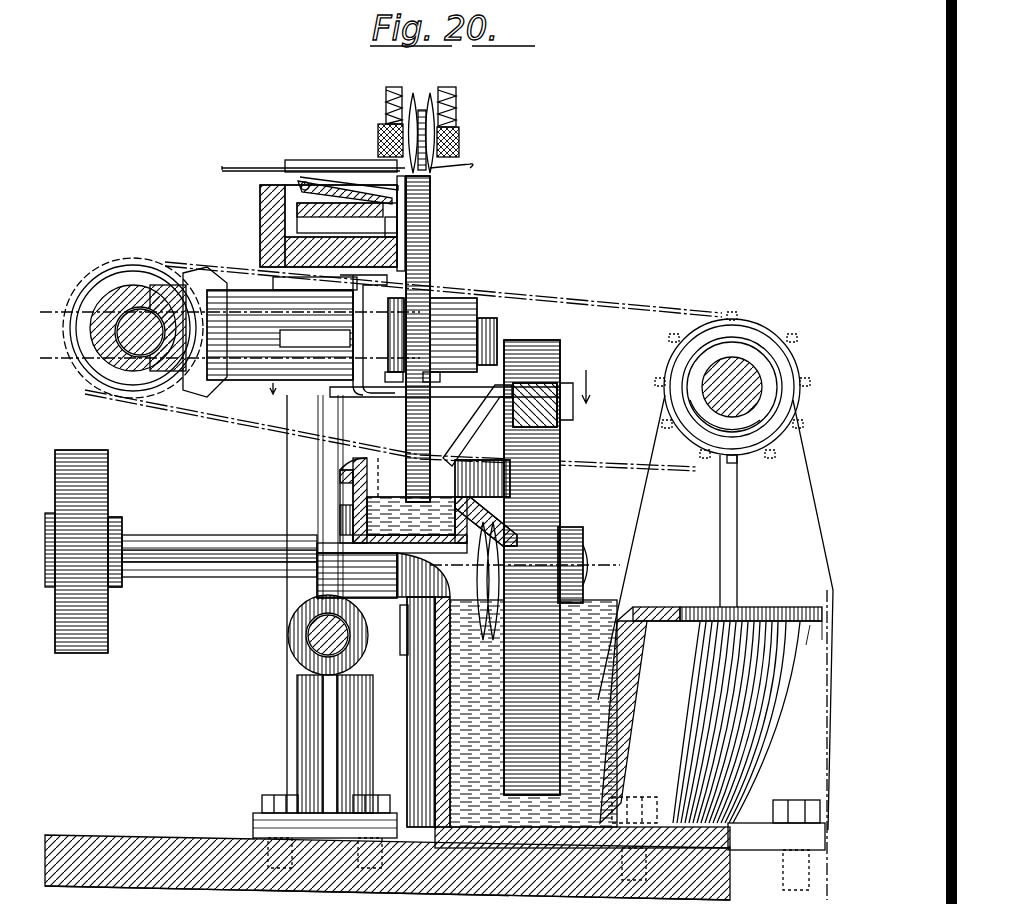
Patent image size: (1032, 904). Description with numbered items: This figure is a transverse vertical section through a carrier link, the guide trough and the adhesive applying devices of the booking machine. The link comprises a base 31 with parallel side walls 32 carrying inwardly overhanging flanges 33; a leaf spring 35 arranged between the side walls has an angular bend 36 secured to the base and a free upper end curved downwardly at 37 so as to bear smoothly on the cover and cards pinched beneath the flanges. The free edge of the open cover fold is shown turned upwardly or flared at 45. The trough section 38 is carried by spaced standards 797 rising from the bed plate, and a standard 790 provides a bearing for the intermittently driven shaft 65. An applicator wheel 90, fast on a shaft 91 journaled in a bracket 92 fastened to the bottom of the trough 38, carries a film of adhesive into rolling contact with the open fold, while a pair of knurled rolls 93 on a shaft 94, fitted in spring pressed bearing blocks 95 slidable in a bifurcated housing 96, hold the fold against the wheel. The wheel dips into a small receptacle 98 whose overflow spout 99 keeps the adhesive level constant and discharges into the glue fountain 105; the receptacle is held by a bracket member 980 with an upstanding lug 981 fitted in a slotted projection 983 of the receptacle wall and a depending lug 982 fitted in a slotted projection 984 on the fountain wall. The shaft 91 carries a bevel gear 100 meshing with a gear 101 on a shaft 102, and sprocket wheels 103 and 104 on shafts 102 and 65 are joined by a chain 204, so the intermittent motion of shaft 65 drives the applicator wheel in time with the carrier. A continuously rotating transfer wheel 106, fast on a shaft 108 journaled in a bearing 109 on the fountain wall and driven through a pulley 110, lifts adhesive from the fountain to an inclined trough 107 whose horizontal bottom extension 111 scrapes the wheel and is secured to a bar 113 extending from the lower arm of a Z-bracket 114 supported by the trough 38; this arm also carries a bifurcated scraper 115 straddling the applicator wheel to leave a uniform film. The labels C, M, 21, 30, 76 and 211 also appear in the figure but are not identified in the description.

The cutting edge C is at (233, 162).
The mark line M is at (340, 183).
The direction arrow 21 is at (596, 389).
The knife block 30 is at (398, 231).
The base 31 is at (347, 218).
The side walls 32 is at (298, 185).
The inwardly overhanging flanges 33 is at (290, 160).
The leaf spring 35 is at (322, 196).
The angular bend 36 is at (262, 218).
The downwardly curved spring end 37 is at (430, 190).
The guide trough 38 is at (262, 205).
The upwardly flared edge 45 is at (470, 167).
The intermittently driven shaft 65 is at (740, 365).
The roller wheel 76 is at (312, 645).
The applicator wheel 90 is at (432, 213).
The shaft 91 is at (445, 302).
The bracket 92 is at (262, 380).
The knurled rolls 93 is at (432, 98).
The shaft 94 is at (458, 130).
The spring pressed bearing blocks 95 is at (460, 148).
The bifurcated housing 96 is at (392, 100).
The receptacle 98 is at (345, 482).
The overflow spout 99 is at (496, 482).
The bevel gear 100 is at (215, 270).
The bevel gear 101 is at (140, 285).
The shaft 102 is at (135, 290).
The sprocket wheel 103 is at (95, 283).
The sprocket wheel 104 is at (727, 310).
The glue fountain 105 is at (628, 722).
The transfer wheel 106 is at (546, 650).
The inclined trough 107 is at (472, 432).
The shaft 108 is at (170, 556).
The bearing 109 is at (477, 593).
The pulley 110 is at (78, 655).
The horizontal bottom extension 111 is at (565, 415).
The bar 113 is at (545, 405).
The Z-bracket 114 is at (520, 395).
The bifurcated scraper 115 is at (355, 395).
The chain 204 is at (622, 305).
The direction arrow 211 is at (262, 386).
The standard 790 is at (715, 647).
The standards 797 is at (286, 764).
The bracket member 980 is at (320, 580).
The upstanding lug 981 is at (345, 508).
The depending lug 982 is at (308, 630).
The slotted projection 983 is at (324, 473).
The slotted projection 984 is at (402, 655).